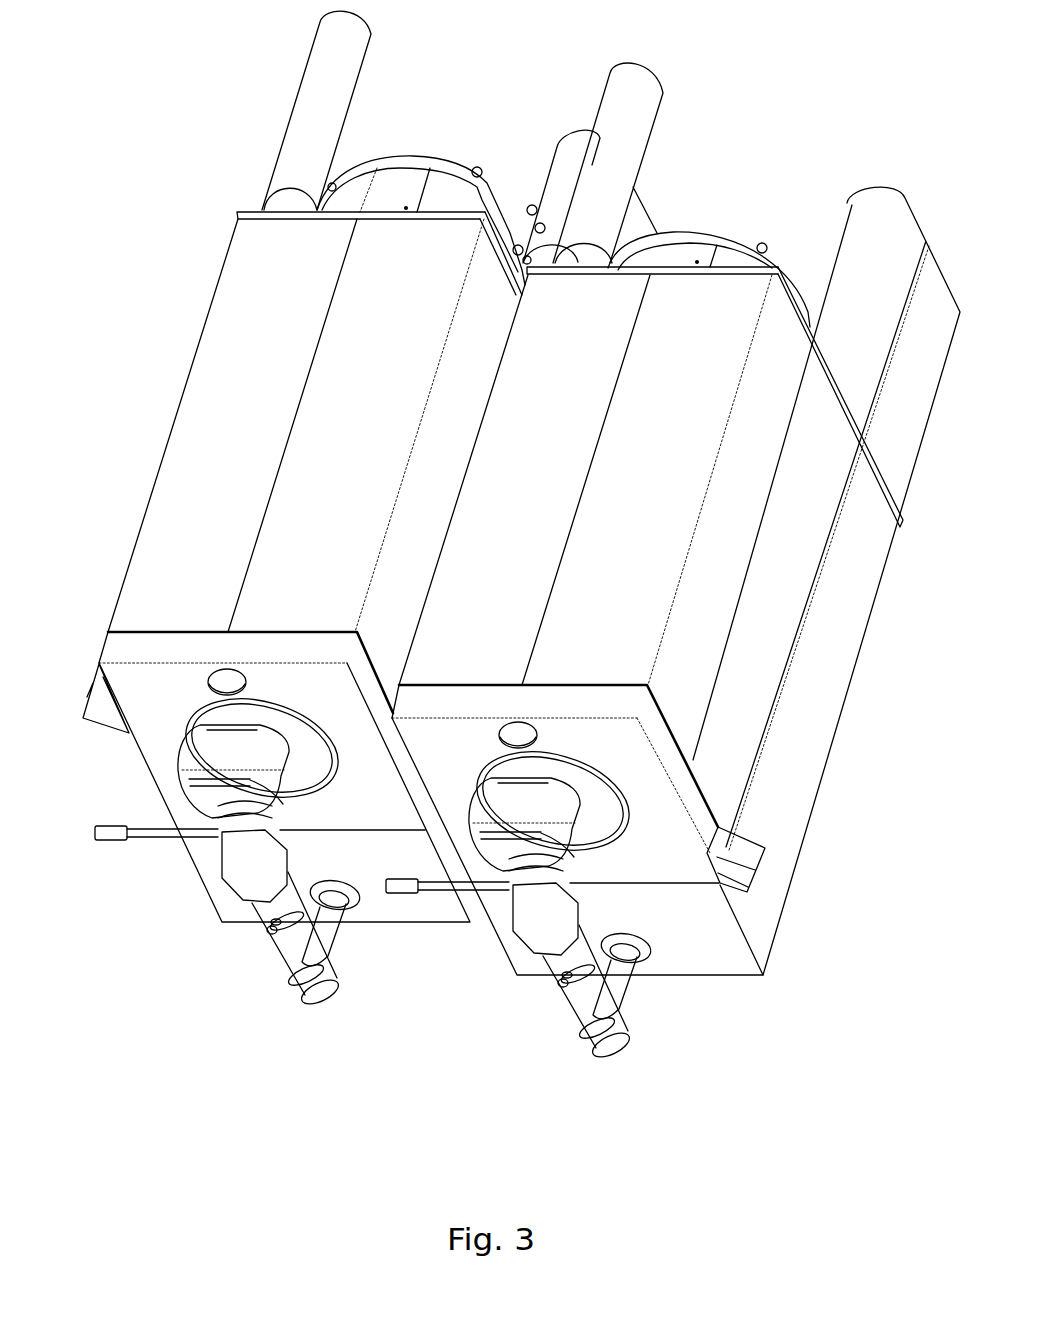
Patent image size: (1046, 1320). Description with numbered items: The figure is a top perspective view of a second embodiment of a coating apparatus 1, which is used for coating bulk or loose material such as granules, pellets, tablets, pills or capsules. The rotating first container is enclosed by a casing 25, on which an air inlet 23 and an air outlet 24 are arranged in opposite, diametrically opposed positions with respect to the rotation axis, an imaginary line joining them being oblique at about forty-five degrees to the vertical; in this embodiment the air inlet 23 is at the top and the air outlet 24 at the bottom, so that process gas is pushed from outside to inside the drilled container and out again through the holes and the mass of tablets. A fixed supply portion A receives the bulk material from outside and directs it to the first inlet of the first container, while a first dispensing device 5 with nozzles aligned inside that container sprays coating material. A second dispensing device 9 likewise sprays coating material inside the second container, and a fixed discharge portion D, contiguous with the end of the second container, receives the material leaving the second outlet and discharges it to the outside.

The coating apparatus 1 is at (112, 88).
The first dispensing device 5 is at (217, 753).
The second dispensing device 9 is at (552, 815).
The air inlet 23 is at (313, 125).
The air outlet 24 is at (563, 170).
The casing 25 is at (218, 378).
The supply portion A is at (148, 708).
The discharge portion D is at (688, 808).